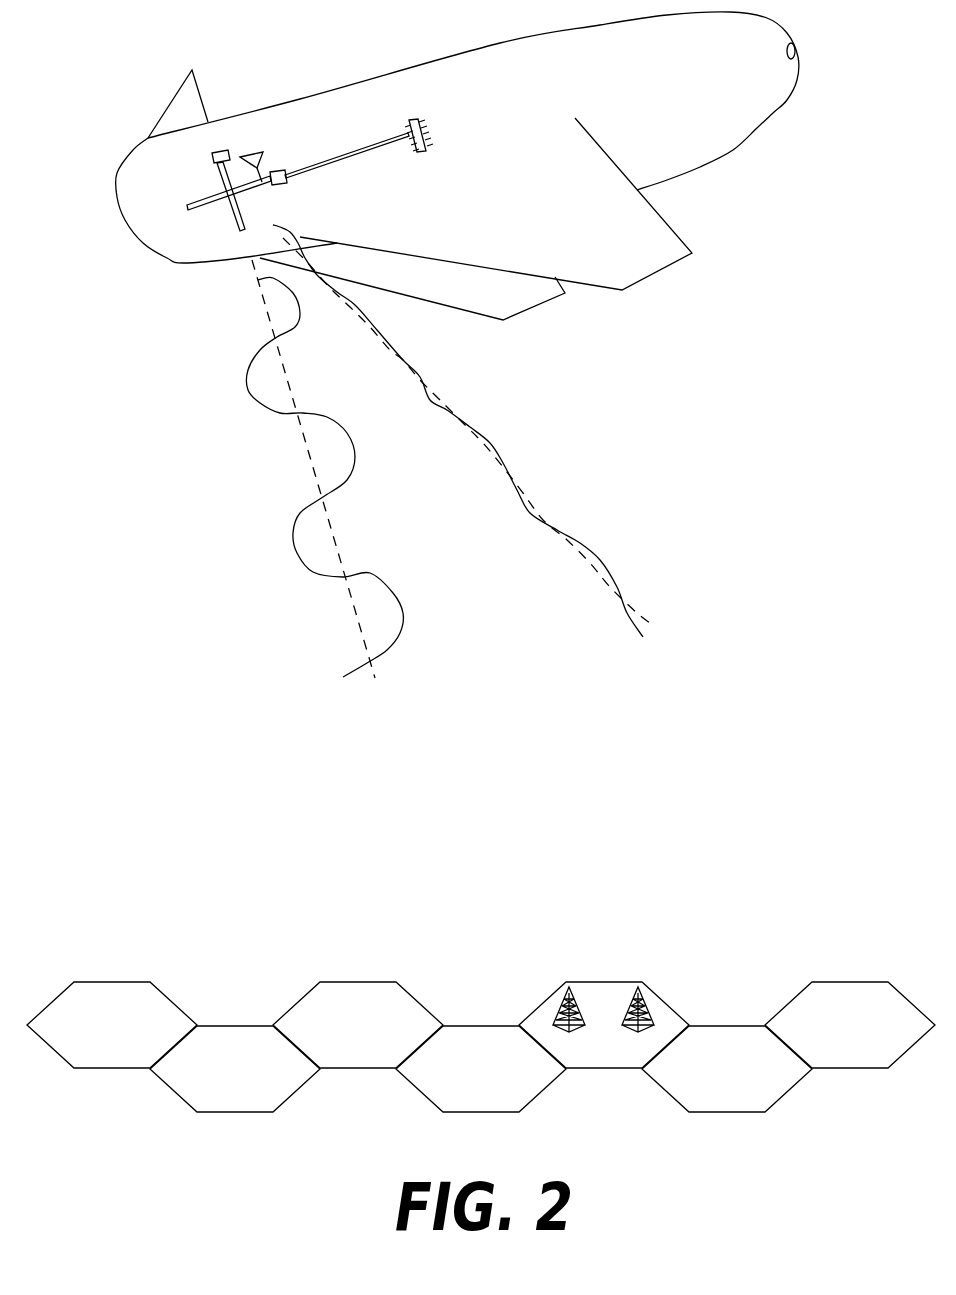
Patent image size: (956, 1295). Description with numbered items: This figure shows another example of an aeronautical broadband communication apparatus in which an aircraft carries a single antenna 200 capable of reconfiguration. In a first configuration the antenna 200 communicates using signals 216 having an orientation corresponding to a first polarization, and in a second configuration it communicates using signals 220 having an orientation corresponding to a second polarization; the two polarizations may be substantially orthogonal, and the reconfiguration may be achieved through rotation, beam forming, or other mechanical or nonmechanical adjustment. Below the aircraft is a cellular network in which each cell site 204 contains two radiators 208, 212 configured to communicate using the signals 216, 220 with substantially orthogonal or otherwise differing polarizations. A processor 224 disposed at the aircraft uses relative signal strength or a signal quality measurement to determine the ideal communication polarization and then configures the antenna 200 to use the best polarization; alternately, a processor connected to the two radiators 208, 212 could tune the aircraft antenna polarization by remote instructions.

The single antenna 200 is at (228, 152).
The cell site 204 is at (590, 981).
The radiator 208 is at (578, 984).
The radiator 212 is at (648, 984).
The signals 216 is at (300, 325).
The signals 220 is at (490, 443).
The processor 224 is at (415, 118).